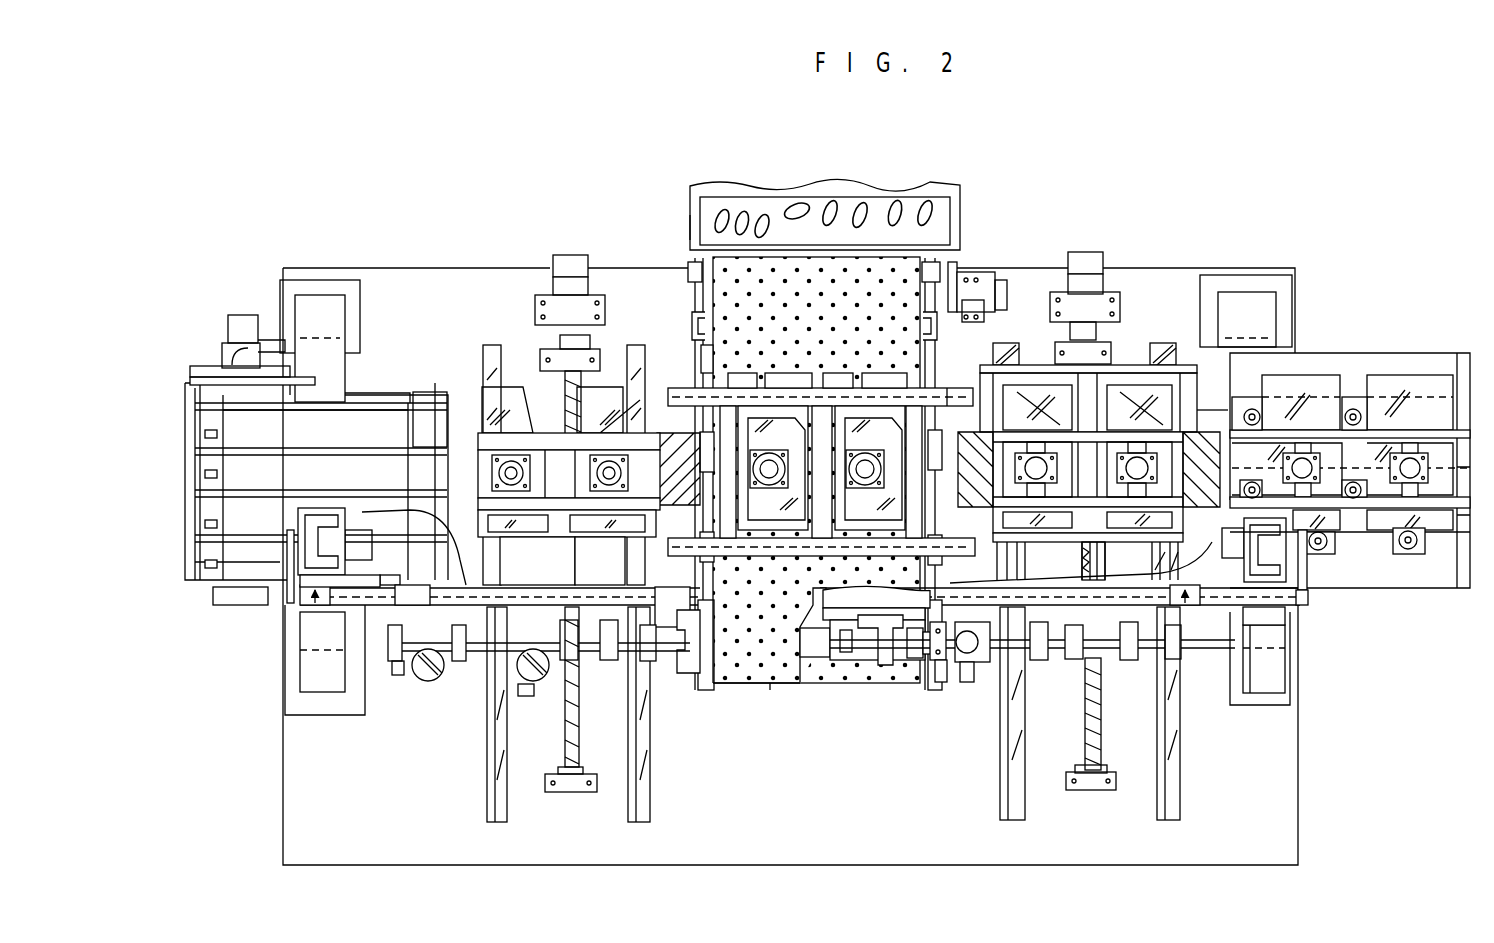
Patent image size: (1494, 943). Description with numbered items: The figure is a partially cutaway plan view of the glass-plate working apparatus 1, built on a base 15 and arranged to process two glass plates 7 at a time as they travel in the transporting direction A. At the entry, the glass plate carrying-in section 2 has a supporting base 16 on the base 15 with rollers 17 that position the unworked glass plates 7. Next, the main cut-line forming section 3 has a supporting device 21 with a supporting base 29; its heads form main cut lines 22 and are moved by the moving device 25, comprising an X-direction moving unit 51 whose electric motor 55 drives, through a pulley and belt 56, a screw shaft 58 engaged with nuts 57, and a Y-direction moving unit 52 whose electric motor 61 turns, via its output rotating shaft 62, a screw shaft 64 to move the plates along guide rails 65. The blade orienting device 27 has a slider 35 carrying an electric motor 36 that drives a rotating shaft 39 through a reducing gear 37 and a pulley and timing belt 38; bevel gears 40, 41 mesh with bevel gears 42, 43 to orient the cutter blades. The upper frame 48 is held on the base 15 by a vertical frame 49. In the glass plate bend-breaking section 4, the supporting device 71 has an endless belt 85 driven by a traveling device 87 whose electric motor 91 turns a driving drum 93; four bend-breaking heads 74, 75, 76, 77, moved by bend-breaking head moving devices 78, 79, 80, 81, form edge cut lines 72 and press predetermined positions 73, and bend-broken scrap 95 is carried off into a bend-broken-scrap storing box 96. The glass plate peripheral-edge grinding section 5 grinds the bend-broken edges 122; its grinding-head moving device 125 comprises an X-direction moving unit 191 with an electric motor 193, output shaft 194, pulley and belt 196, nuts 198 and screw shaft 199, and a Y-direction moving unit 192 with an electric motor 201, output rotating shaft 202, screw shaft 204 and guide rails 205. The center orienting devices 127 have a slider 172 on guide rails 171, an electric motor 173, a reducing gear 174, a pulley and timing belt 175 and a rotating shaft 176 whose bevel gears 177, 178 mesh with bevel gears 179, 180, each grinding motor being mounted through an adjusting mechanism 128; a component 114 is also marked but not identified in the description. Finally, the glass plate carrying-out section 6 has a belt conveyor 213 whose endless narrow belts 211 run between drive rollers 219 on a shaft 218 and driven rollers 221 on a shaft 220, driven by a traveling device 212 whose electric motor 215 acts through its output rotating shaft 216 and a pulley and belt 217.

The glass-plate working apparatus 1 is at (1178, 250).
The glass plate carrying-in section 2 is at (1398, 600).
The main cut-line forming section 3 is at (1090, 792).
The glass plate bend-breaking section 4 is at (832, 712).
The glass plate peripheral-edge grinding section 5 is at (566, 800).
The glass plate carrying-out section 6 is at (210, 630).
The glass plates 7 is at (760, 395).
The base 15 is at (1302, 790).
The supporting base 16 is at (1438, 588).
The rollers 17 is at (1249, 410).
The supporting device 21 is at (1188, 362).
The main cut lines 22 is at (800, 400).
The moving device 25 is at (1090, 250).
The blade orienting device 27 is at (882, 680).
The supporting base 29 is at (1192, 419).
The slider 35 is at (838, 632).
The electric motor 36 is at (818, 660).
The reducing gear 37 is at (870, 668).
The pulley and timing belt 38 is at (905, 660).
The rotating shaft 39 is at (1040, 662).
The bevel gear 40 is at (945, 662).
The bevel gear 41 is at (1072, 660).
The bevel gear 42 is at (975, 672).
The bevel gear 43 is at (1110, 662).
The upper frame 48 is at (346, 606).
The vertical frame 49 is at (1280, 676).
The X-direction moving unit 51 is at (1268, 660).
The Y-direction moving unit 52 is at (1072, 250).
The electric motor 55 is at (1300, 562).
The pulley and belt 56 is at (1306, 598).
The nuts 57 is at (1092, 582).
The screw shaft 58 is at (1240, 625).
The electric motor 61 is at (1103, 285).
The output rotating shaft 62 is at (1100, 340).
The screw shaft 64 is at (1102, 700).
The guide rails 65 is at (1025, 742).
The supporting device 71 is at (772, 700).
The edge cut lines 72 is at (742, 392).
The predetermined positions 73 is at (785, 400).
The bend-breaking head 74 is at (935, 425).
The bend-breaking head 75 is at (935, 528).
The bend-breaking head 76 is at (700, 384).
The bend-breaking head 77 is at (745, 575).
The bend-breaking head moving device 78 is at (965, 272).
The bend-breaking head moving device 79 is at (1005, 560).
The bend-breaking head moving device 80 is at (672, 372).
The bend-breaking head moving device 81 is at (620, 524).
The endless belt 85 is at (745, 688).
The traveling device 87 is at (990, 285).
The electric motor 91 is at (996, 352).
The driving drum 93 is at (952, 262).
The bend-broken scrap 95 is at (830, 205).
The bend-broken-scrap storing box 96 is at (690, 212).
The perforated plate 114 is at (915, 383).
The bend-broken edges 122 is at (483, 410).
The grinding-head moving device 125 is at (598, 250).
The center orienting device 127 is at (398, 700).
The adjusting mechanism 128 is at (510, 690).
The guide rails 171 is at (386, 600).
The slider 172 is at (598, 600).
The electric motor 173 is at (667, 665).
The reducing gear 174 is at (677, 630).
The pulley and timing belt 175 is at (598, 665).
The rotating shaft 176 is at (480, 585).
The bevel gear 177 is at (400, 675).
The bevel gear 178 is at (475, 665).
The bevel gear 179 is at (424, 682).
The bevel gear 180 is at (528, 675).
The X-direction moving unit 191 is at (320, 695).
The Y-direction moving unit 192 is at (552, 262).
The electric motor 193 is at (350, 528).
The output shaft 194 is at (290, 600).
The pulley and belt 196 is at (290, 612).
The nuts 198 is at (450, 606).
The screw shaft 199 is at (548, 597).
The electric motor 201 is at (563, 252).
The output rotating shaft 202 is at (560, 343).
The screw shaft 204 is at (582, 745).
The guide rails 205 is at (487, 803).
The endless narrow belts 211 is at (330, 420).
The traveling device 212 is at (226, 304).
The belt conveyor 213 is at (396, 374).
The electric motor 215 is at (246, 315).
The output rotating shaft 216 is at (228, 343).
The pulley and belt 217 is at (200, 366).
The shaft 218 is at (292, 472).
The drive rollers 219 is at (213, 500).
The shaft 220 is at (418, 430).
The driven rollers 221 is at (436, 475).